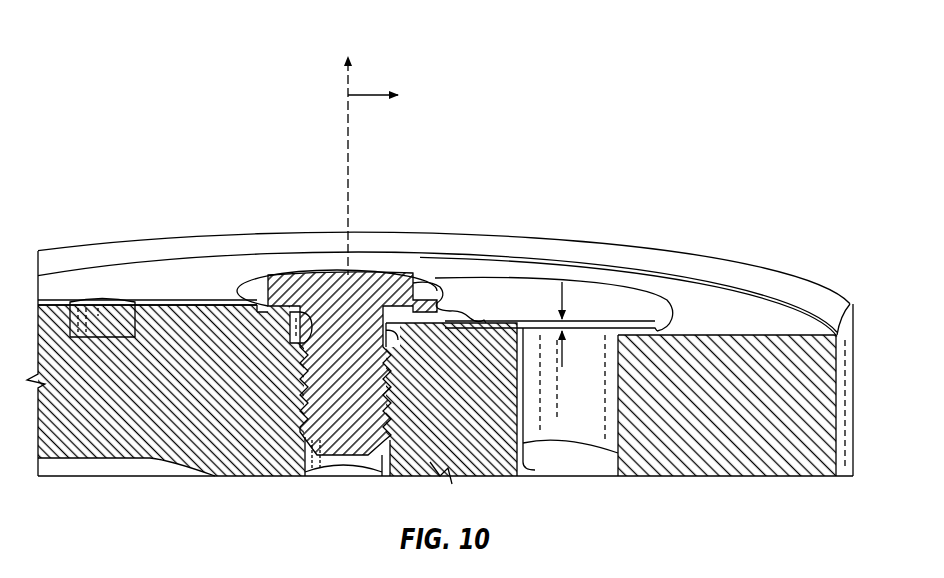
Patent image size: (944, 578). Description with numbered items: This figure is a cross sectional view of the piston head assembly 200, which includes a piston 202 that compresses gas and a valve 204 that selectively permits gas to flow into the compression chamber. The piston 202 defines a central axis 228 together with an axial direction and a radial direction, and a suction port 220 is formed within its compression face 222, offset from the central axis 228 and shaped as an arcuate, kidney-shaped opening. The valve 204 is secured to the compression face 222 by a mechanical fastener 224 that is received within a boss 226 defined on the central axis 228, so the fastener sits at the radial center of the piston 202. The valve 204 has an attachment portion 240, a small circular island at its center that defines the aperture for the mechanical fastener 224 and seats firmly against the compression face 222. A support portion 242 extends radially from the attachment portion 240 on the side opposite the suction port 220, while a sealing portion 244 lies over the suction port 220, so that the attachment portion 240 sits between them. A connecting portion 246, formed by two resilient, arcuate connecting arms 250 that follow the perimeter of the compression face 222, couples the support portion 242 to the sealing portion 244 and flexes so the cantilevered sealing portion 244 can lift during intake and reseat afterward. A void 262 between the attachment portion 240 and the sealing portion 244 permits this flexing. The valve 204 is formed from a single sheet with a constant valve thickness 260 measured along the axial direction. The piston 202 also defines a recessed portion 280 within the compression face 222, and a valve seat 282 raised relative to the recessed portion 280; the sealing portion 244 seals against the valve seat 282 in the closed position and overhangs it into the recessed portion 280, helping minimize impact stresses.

The piston head assembly 200 is at (800, 132).
The piston 202 is at (818, 415).
The valve 204 is at (115, 278).
The suction port 220 is at (588, 396).
The compression face 222 is at (792, 303).
The mechanical fastener 224 is at (393, 289).
The boss 226 is at (366, 407).
The central axis 228 is at (345, 195).
The attachment portion 240 is at (263, 325).
The support portion 242 is at (183, 278).
The sealing portion 244 is at (623, 303).
The connecting portion 246 is at (393, 255).
The connecting arms 250 is at (366, 254).
The valve thickness 260 is at (562, 342).
The void 262 is at (453, 303).
The recessed portion 280 is at (708, 304).
The valve seat 282 is at (626, 335).